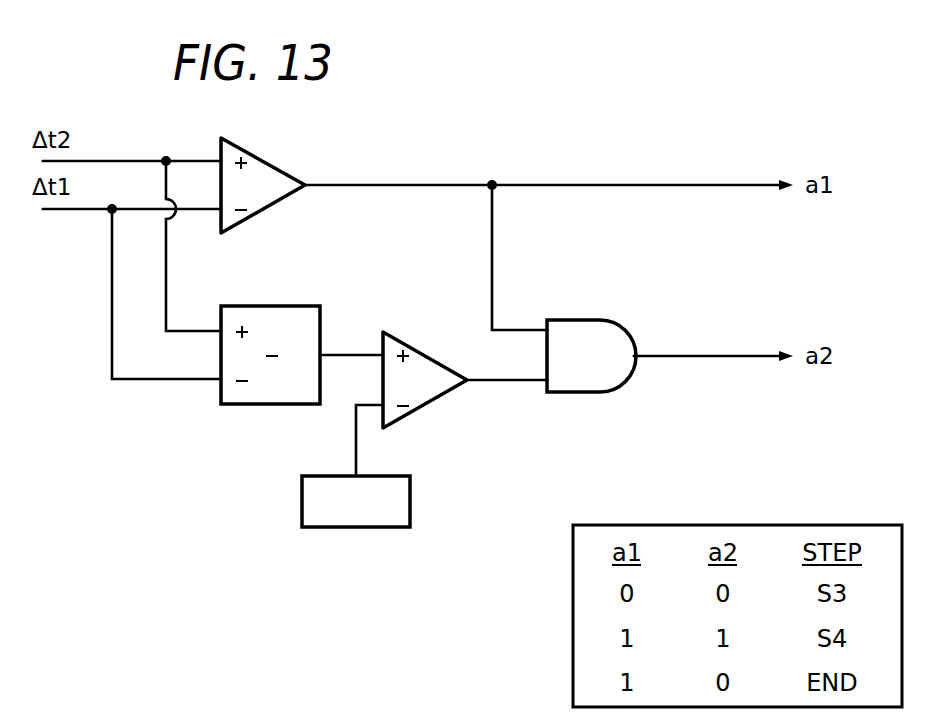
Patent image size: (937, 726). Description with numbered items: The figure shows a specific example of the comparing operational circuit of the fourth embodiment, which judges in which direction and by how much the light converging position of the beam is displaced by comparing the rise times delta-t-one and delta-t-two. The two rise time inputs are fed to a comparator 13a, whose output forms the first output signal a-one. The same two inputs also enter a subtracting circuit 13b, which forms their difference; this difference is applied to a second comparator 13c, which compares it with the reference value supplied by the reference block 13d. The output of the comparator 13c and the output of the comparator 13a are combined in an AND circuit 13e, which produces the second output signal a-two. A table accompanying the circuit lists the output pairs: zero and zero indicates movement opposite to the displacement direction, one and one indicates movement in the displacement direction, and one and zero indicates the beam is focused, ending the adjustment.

The comparator 13a is at (267, 208).
The subtracting circuit 13b is at (262, 405).
The comparator 13c is at (430, 406).
The reference T1 13d is at (410, 500).
The AND circuit 13e is at (623, 328).